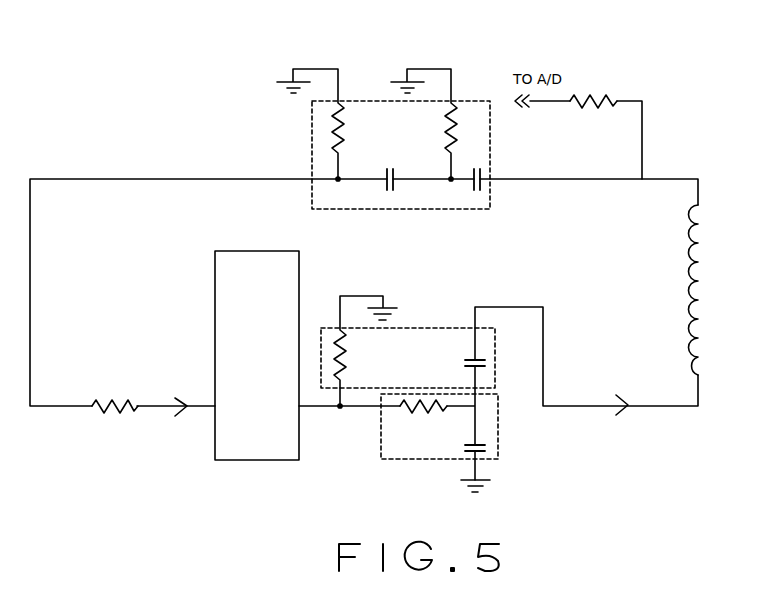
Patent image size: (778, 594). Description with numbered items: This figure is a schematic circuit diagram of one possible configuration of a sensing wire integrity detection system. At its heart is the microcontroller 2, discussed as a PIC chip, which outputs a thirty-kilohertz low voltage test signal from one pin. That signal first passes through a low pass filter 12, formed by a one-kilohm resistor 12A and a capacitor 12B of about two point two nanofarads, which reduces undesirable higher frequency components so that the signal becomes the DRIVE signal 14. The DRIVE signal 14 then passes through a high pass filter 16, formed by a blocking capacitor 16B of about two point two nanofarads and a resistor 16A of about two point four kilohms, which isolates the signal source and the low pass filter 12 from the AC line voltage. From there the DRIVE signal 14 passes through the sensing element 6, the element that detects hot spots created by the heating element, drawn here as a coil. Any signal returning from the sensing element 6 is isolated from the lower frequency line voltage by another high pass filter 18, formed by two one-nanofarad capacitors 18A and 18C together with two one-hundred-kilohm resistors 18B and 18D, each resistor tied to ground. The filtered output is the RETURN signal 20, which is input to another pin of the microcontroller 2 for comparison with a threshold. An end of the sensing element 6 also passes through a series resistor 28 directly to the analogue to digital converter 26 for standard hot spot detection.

The microcontroller 2 is at (285, 284).
The sensing element 6 is at (698, 280).
The low pass filter 12 is at (445, 460).
The resistor 12A is at (428, 412).
The capacitor 12B is at (488, 448).
The DRIVE signal 14 is at (624, 418).
The high pass filter 16 is at (452, 327).
The resistor 16A is at (338, 373).
The blocking capacitor 16B is at (488, 362).
The high pass filter 18 is at (492, 147).
The capacitor 18A is at (483, 187).
The resistor 18B is at (455, 127).
The capacitor 18C is at (388, 168).
The resistor 18D is at (336, 137).
The RETURN signal 20 is at (181, 421).
The analogue to digital converter 26 is at (590, 97).
The input resistor 28 is at (116, 413).